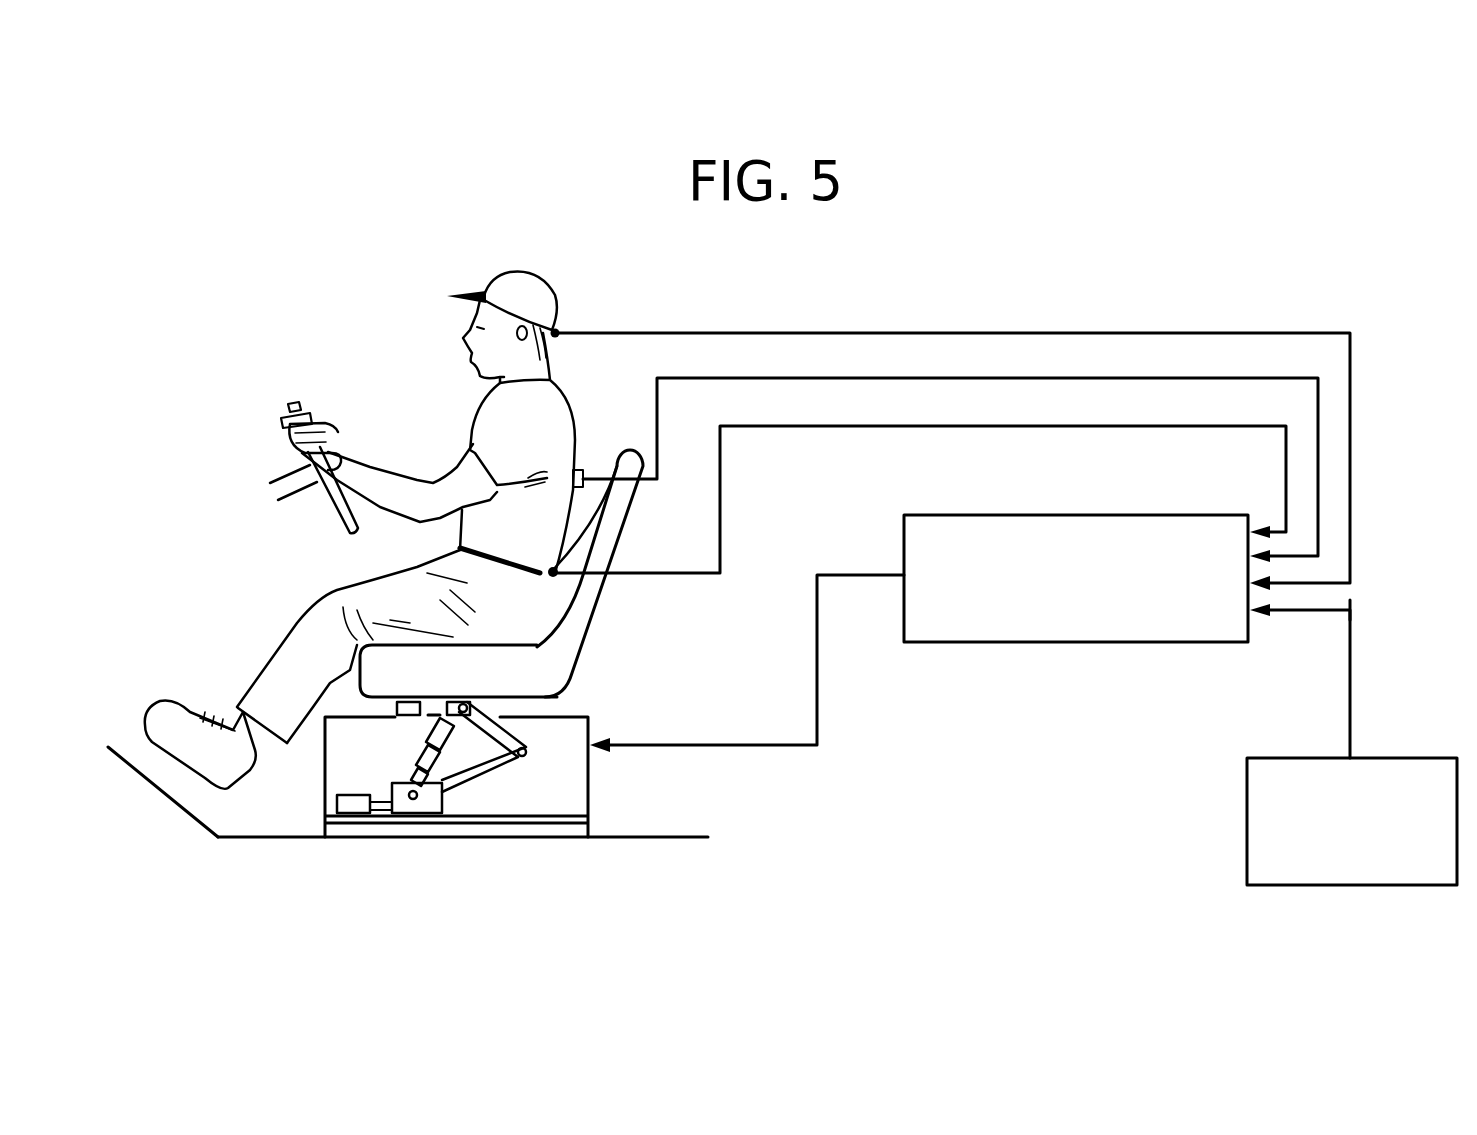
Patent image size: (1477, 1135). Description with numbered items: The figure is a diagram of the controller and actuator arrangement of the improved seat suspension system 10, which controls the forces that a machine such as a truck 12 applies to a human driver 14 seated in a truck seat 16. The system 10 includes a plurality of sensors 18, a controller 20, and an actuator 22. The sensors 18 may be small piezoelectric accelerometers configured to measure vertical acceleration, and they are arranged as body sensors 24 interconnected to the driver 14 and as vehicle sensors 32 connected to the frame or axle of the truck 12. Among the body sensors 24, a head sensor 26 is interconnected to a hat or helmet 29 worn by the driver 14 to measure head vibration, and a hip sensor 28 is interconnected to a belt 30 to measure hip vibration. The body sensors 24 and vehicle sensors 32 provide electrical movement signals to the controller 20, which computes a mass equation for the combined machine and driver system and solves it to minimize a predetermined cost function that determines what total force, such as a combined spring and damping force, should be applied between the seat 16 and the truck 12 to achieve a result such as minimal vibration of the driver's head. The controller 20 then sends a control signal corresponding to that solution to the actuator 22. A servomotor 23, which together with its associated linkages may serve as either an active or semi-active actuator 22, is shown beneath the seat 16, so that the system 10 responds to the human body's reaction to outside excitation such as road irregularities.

The seat suspension system 10 is at (1290, 252).
The truck 12 is at (668, 840).
The driver 14 is at (408, 433).
The truck seat 16 is at (503, 692).
The sensors 18 is at (629, 180).
The controller 20 is at (1069, 643).
The actuator 22 is at (350, 795).
The servomotor 23 is at (300, 778).
The body sensors 24 is at (663, 286).
The head sensor 26 is at (558, 331).
The hip sensor 28 is at (570, 558).
The hat or helmet 29 is at (518, 280).
The belt 30 is at (452, 557).
The vehicle sensors 32 is at (1425, 758).